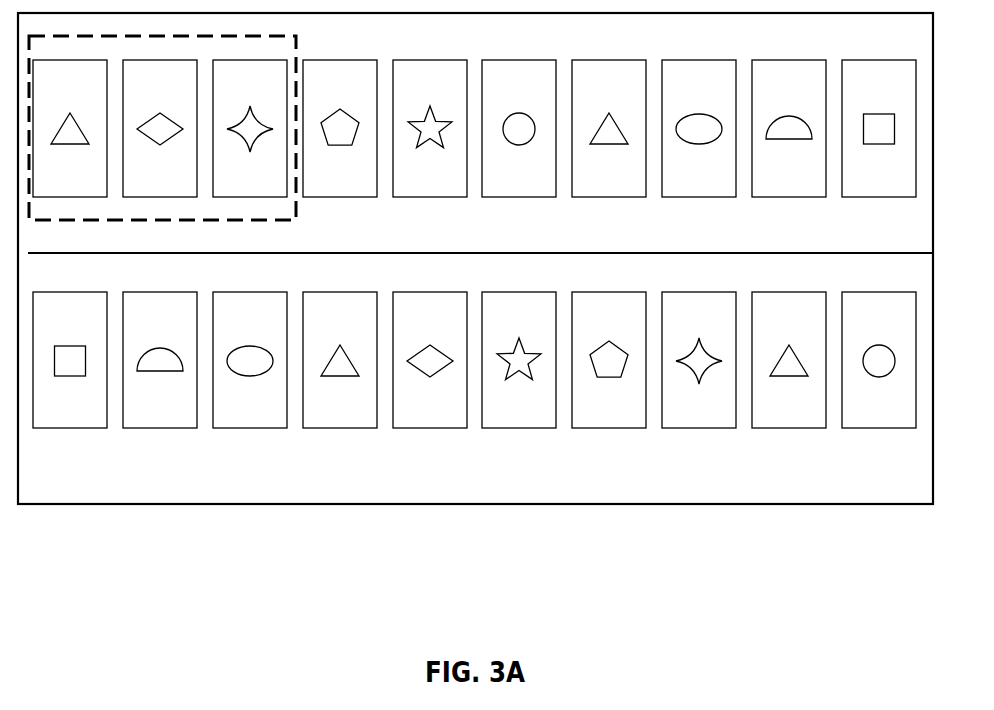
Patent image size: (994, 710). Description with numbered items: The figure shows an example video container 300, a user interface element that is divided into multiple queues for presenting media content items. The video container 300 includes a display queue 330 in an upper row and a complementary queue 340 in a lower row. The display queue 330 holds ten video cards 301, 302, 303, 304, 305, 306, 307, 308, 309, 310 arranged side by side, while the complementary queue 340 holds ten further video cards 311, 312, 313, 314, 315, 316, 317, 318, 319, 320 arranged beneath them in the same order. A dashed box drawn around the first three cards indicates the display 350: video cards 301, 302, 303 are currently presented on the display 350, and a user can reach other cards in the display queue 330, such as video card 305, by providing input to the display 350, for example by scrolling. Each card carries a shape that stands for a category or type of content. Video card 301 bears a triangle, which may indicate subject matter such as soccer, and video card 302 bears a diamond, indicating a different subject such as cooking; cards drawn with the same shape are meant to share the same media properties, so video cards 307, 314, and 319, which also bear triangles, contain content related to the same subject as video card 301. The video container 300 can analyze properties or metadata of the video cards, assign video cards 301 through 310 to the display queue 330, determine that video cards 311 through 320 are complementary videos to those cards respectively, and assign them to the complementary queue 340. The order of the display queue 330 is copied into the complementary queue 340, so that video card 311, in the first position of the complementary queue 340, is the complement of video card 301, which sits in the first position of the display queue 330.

The video container 300 is at (505, 39).
The video card 301 is at (70, 128).
The video card 302 is at (160, 128).
The video card 303 is at (250, 128).
The video card 304 is at (340, 128).
The video card 305 is at (430, 128).
The video card 306 is at (519, 128).
The video card 307 is at (609, 128).
The video card 308 is at (699, 128).
The video card 309 is at (789, 128).
The video card 310 is at (879, 128).
The video card 311 is at (70, 360).
The video card 312 is at (160, 360).
The video card 313 is at (250, 360).
The video card 314 is at (340, 360).
The video card 315 is at (430, 360).
The video card 316 is at (519, 360).
The video card 317 is at (609, 360).
The video card 318 is at (699, 360).
The video card 319 is at (789, 360).
The video card 320 is at (879, 360).
The display queue 330 is at (474, 152).
The complementary queue 340 is at (480, 365).
The display 350 is at (297, 200).